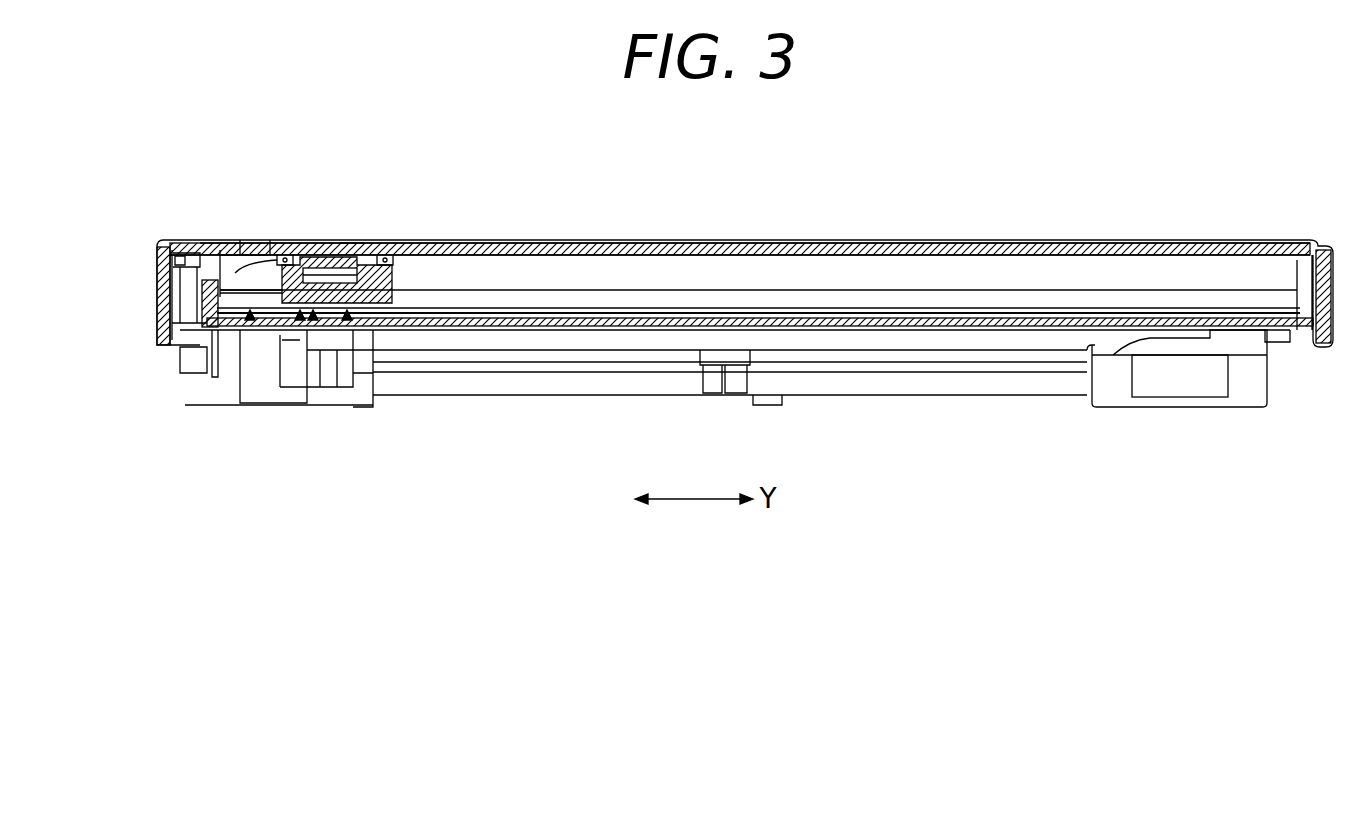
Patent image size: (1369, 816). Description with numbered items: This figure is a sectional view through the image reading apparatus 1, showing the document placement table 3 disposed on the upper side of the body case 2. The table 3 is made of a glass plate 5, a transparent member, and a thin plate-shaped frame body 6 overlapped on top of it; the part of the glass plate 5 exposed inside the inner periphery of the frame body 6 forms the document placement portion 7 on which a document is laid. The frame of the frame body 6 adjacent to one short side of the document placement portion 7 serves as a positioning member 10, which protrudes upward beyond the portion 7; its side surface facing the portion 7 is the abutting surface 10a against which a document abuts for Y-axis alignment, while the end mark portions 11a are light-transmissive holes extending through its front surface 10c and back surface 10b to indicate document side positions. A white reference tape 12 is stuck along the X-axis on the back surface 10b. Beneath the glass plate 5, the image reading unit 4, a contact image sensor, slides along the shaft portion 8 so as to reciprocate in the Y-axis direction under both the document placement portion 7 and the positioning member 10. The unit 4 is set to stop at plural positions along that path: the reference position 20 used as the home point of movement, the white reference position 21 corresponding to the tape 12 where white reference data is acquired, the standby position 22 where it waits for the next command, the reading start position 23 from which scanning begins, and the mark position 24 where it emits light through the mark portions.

The image reading apparatus 1 is at (160, 176).
The body case 2 is at (157, 305).
The document placement table 3 is at (1084, 232).
The image reading unit 4 is at (400, 268).
The glass plate 5 is at (656, 250).
The frame body 6 is at (1270, 243).
The document placement portion 7 is at (530, 242).
The shaft portion 8 is at (572, 301).
The positioning member 10 is at (232, 238).
The abutting surface 10a is at (350, 240).
The back surface 10b is at (167, 259).
The front surface 10c is at (258, 238).
The end mark portion 11a is at (338, 238).
The white reference tape 12 is at (297, 256).
The reference position 20 is at (250, 330).
The white reference position 21 is at (303, 330).
The standby position 22 is at (282, 330).
The reading start position 23 is at (370, 378).
The mark position 24 is at (337, 330).